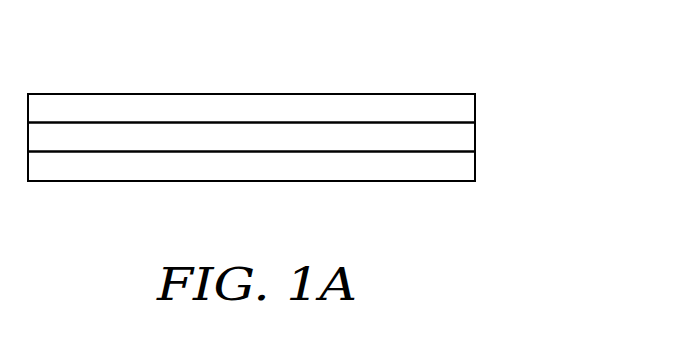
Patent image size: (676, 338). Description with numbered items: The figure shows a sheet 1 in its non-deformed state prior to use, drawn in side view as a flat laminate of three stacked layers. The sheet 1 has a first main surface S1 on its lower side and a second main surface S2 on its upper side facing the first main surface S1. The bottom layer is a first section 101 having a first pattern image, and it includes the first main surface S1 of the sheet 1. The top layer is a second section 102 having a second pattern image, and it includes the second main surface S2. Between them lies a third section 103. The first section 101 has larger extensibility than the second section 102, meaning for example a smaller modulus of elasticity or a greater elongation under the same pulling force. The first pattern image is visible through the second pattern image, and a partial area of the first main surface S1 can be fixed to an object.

The sheet 1 is at (360, 81).
The first section 101 is at (481, 153).
The second section 102 is at (481, 95).
The third section 103 is at (481, 124).
The first main surface S1 is at (87, 181).
The second main surface S2 is at (93, 93).